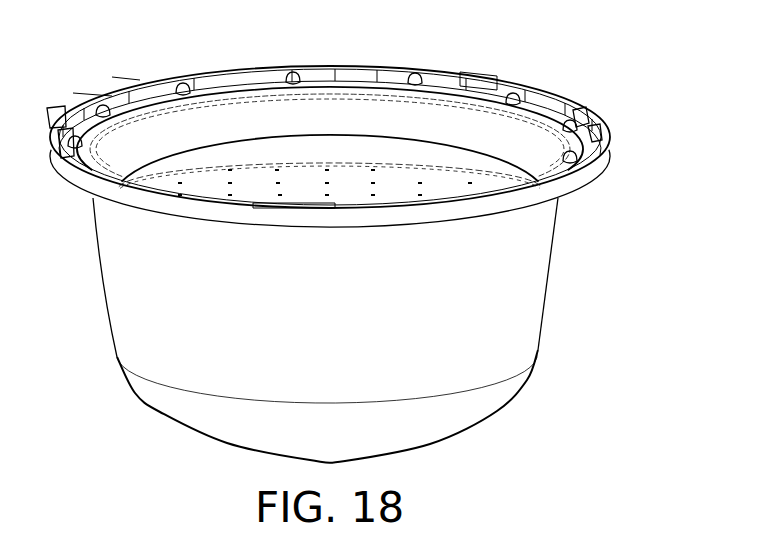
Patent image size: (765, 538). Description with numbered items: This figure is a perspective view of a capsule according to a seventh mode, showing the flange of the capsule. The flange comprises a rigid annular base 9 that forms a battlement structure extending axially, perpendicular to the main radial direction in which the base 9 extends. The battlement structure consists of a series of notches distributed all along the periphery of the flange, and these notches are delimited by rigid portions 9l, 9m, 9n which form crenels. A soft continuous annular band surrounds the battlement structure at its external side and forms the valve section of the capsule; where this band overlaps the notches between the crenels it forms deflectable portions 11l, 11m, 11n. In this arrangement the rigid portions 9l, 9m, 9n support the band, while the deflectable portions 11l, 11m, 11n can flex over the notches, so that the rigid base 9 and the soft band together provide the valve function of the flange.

The annular base 9 is at (455, 48).
The rigid portion 9l is at (533, 97).
The deflectable portion 11l is at (562, 101).
The rigid portion 9m is at (585, 115).
The deflectable portion 11m is at (607, 123).
The rigid portion 9n is at (600, 148).
The deflectable portion 11n is at (584, 173).